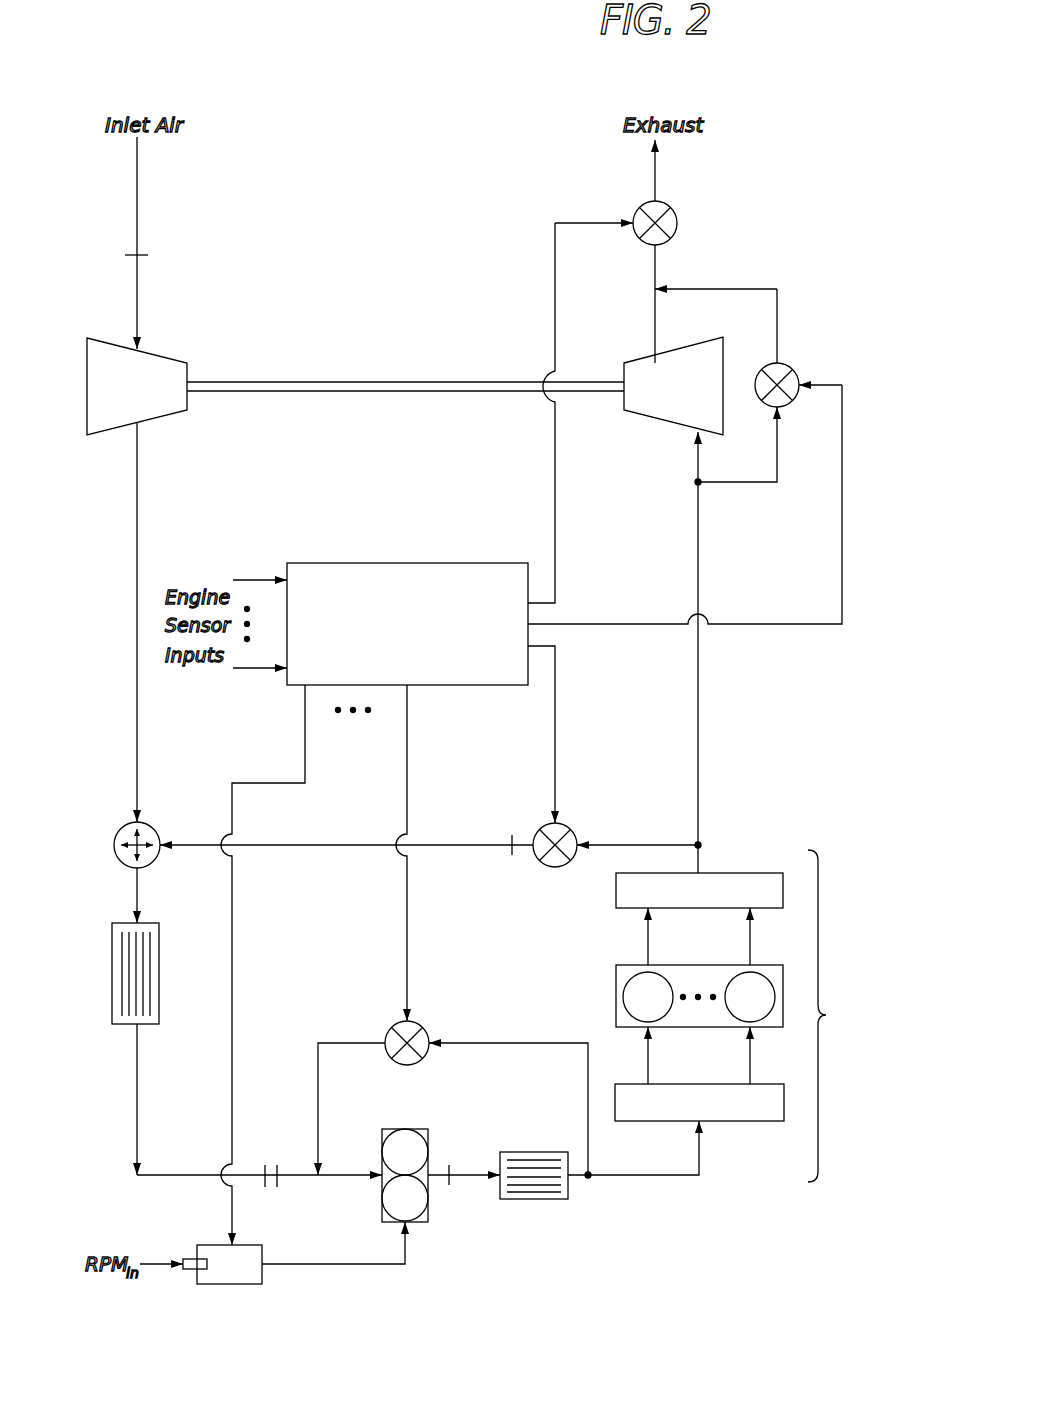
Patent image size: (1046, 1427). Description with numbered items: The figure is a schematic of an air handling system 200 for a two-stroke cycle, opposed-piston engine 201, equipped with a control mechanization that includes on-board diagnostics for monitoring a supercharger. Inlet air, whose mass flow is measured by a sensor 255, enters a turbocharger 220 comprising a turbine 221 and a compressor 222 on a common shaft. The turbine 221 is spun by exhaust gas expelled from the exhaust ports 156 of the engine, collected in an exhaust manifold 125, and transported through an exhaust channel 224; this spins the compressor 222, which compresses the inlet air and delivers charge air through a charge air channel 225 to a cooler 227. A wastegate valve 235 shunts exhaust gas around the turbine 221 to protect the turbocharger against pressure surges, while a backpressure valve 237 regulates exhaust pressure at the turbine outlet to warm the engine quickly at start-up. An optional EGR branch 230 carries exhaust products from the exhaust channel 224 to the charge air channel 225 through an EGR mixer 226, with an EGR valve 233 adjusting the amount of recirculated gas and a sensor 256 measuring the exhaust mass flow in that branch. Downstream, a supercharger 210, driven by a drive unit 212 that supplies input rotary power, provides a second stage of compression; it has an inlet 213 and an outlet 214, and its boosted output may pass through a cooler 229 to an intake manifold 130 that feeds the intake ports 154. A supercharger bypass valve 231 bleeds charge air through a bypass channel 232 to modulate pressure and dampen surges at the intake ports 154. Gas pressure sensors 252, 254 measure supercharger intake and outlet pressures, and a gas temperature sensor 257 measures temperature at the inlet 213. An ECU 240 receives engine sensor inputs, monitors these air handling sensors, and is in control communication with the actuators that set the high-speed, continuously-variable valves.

The air handling system 200 is at (285, 120).
The turbocharger 220 is at (338, 315).
The compressor 222 is at (165, 357).
The turbine 221 is at (653, 417).
The sensor 255 is at (148, 255).
The charge air channel 225 is at (137, 530).
The EGR mixer 226 is at (117, 830).
The cooler 227 is at (112, 985).
The ECU 240 is at (380, 563).
The backpressure valve 237 is at (680, 218).
The wastegate valve 235 is at (790, 363).
The exhaust channel 224 is at (718, 583).
The EGR valve 233 is at (575, 832).
The EGR branch 230 is at (455, 845).
The sensor 256 is at (512, 830).
The exhaust manifold 125 is at (730, 873).
The exhaust ports 156 is at (648, 972).
The intake ports 154 is at (648, 1022).
The opposed-piston engine 201 is at (840, 1016).
The intake manifold 130 is at (737, 1121).
The cooler 229 is at (540, 1199).
The bypass channel 232 is at (505, 1043).
The supercharger bypass valve 231 is at (409, 1066).
The supercharger 210 is at (425, 1222).
The inlet 213 is at (380, 1173).
The outlet 214 is at (437, 1172).
The gas pressure sensor 254 is at (448, 1182).
The gas temperature sensor 257 is at (260, 1167).
The gas pressure sensor 252 is at (280, 1167).
The drive unit 212 is at (203, 1245).